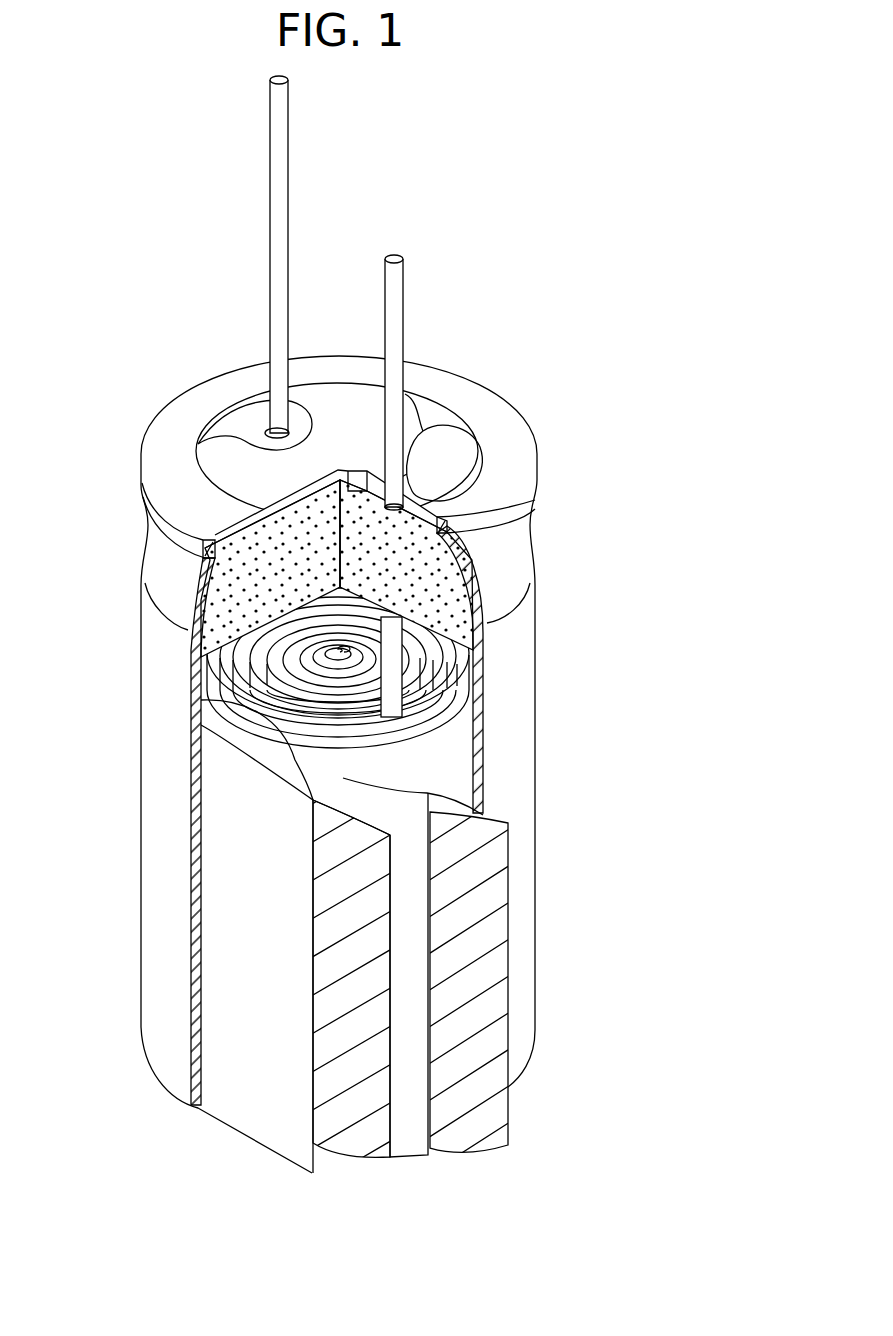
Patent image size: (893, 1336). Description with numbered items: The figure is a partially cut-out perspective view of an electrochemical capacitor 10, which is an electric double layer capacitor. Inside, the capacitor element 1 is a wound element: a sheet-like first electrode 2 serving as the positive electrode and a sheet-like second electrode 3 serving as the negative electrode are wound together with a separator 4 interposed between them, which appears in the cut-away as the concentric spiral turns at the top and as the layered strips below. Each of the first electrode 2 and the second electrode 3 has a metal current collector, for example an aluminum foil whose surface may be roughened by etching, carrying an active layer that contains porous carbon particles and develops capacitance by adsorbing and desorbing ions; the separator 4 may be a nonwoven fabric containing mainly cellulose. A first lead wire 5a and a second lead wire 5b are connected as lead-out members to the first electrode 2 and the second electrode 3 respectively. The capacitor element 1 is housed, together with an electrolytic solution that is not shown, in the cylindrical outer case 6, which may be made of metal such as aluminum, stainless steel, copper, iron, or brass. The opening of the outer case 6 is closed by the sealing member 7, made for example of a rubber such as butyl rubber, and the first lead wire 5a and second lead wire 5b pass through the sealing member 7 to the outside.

The electrochemical capacitor 10 is at (128, 146).
The capacitor element 1 is at (285, 688).
The first electrode 2 is at (478, 846).
The second electrode 3 is at (352, 860).
The separator 4 is at (295, 1148).
The first lead wire 5a is at (278, 162).
The second lead wire 5b is at (393, 290).
The outer case 6 is at (523, 608).
The sealing member 7 is at (232, 583).